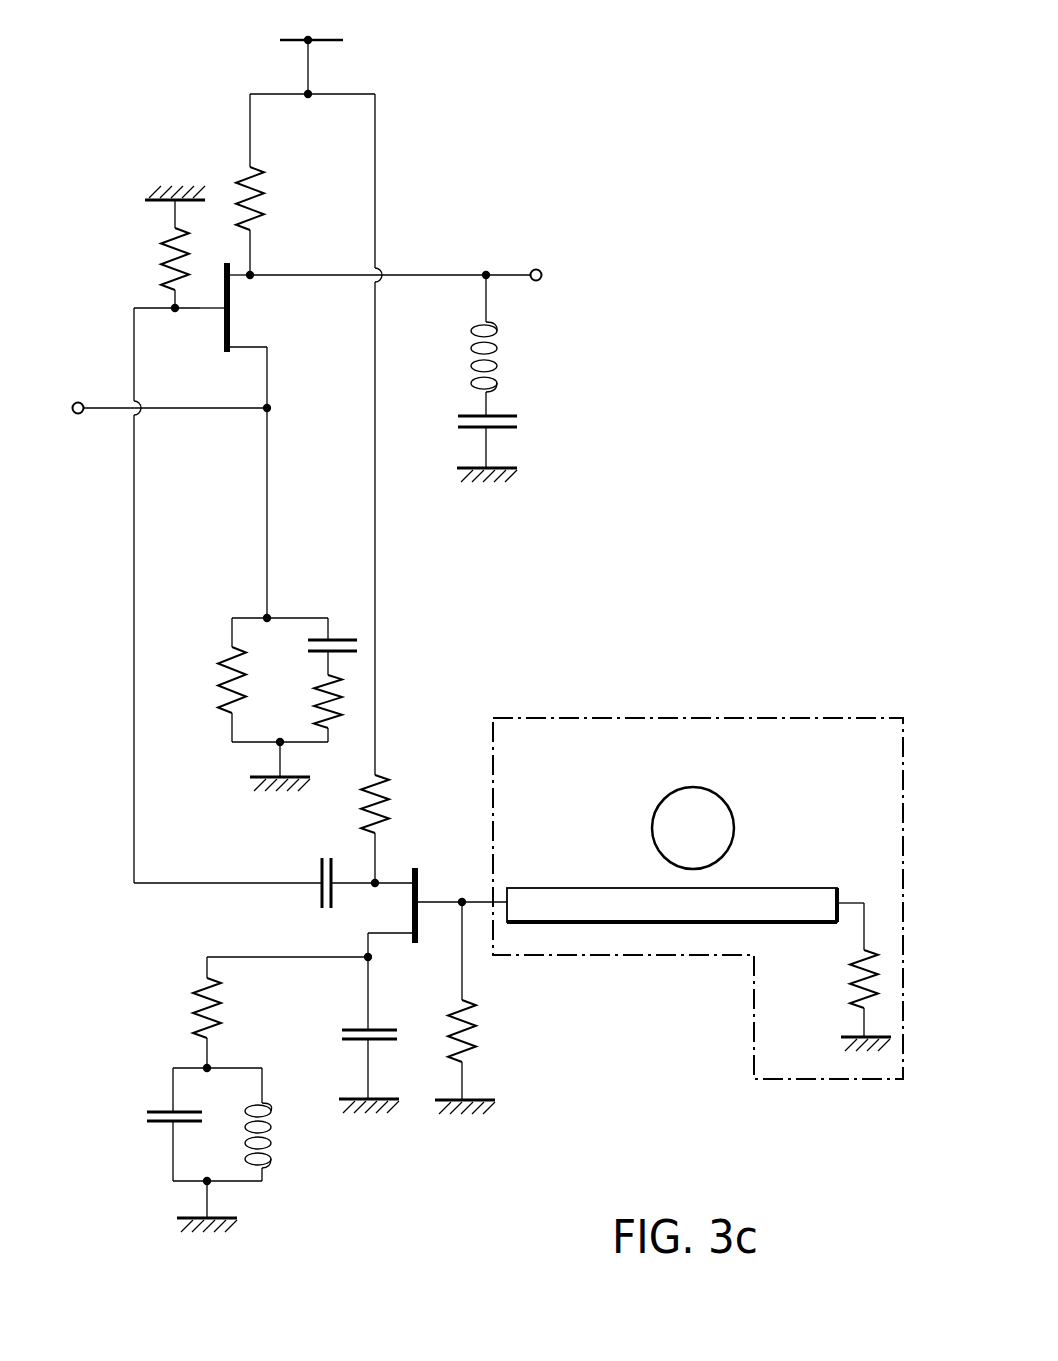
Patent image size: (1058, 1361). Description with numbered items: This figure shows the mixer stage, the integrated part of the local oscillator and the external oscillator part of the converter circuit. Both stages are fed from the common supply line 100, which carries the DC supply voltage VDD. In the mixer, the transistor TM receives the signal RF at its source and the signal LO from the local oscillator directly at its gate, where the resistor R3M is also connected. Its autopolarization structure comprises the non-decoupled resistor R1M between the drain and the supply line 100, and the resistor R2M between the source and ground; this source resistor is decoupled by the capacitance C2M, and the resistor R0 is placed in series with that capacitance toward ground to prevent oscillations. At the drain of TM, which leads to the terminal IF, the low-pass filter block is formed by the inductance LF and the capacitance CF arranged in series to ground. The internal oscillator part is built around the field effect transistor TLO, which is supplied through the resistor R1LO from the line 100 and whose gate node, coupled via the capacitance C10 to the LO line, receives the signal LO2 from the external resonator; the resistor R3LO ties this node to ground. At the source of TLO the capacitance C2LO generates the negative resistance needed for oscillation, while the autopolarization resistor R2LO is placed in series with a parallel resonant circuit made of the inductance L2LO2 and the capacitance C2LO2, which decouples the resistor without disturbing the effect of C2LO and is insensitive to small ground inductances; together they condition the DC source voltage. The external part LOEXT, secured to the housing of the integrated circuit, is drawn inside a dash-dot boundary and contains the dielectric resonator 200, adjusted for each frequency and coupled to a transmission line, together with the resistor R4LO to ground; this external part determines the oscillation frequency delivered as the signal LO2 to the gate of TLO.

The common supply line 100 is at (321, 619).
The dielectric resonator 200 is at (749, 829).
The DC supply voltage VDD is at (311, 50).
The resistor R1M is at (276, 198).
The resistor R3M is at (148, 259).
The resistor R2M is at (207, 680).
The capacitance C2M is at (335, 619).
The resistor R0 is at (343, 701).
The transistor TM is at (246, 312).
The inductance LF is at (504, 357).
The capacitance CF is at (504, 430).
The IF output terminal IF is at (553, 262).
The signal LO is at (125, 318).
The signal RF is at (167, 428).
The resistor R1LO is at (404, 804).
The capacitance C10 is at (304, 874).
The field effect transistor TLO is at (396, 906).
The signal LO' LO2 is at (477, 912).
The resistor R2LO is at (235, 1008).
The capacitance C2LO is at (385, 1009).
The capacitance C2LO2 is at (153, 1092).
The inductance L2LO2 is at (288, 1140).
The resistor R3LO is at (490, 1031).
The resistor R4LO is at (829, 979).
The external part of the local oscillator LOEXT is at (698, 870).